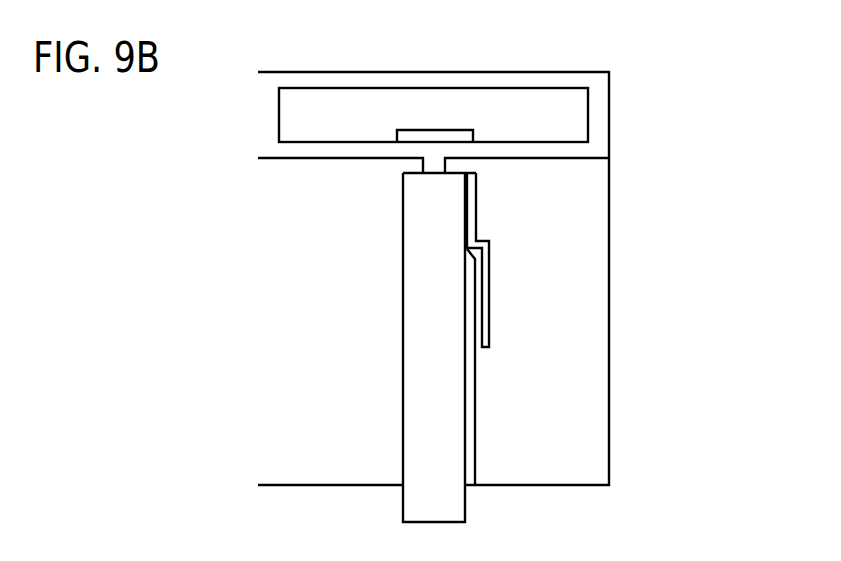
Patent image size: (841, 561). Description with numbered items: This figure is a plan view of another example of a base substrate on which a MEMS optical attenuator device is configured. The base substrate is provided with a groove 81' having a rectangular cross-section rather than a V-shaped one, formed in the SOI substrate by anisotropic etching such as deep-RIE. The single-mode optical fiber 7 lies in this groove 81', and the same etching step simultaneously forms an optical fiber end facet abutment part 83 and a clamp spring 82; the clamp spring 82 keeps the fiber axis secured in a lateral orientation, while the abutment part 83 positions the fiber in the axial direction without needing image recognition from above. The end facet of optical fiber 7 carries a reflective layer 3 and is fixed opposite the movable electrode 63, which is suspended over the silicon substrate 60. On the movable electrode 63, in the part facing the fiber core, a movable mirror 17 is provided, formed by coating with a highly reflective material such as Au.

The reflective layer 3 is at (402, 173).
The single-mode optical fiber 7 is at (416, 311).
The movable mirror 17 is at (417, 77).
The movable electrode 63 is at (425, 130).
The silicon substrate 60 is at (538, 98).
The optical fiber end facet abutment part 83 is at (457, 163).
The clamp spring 82 is at (479, 281).
The groove 81' is at (572, 367).